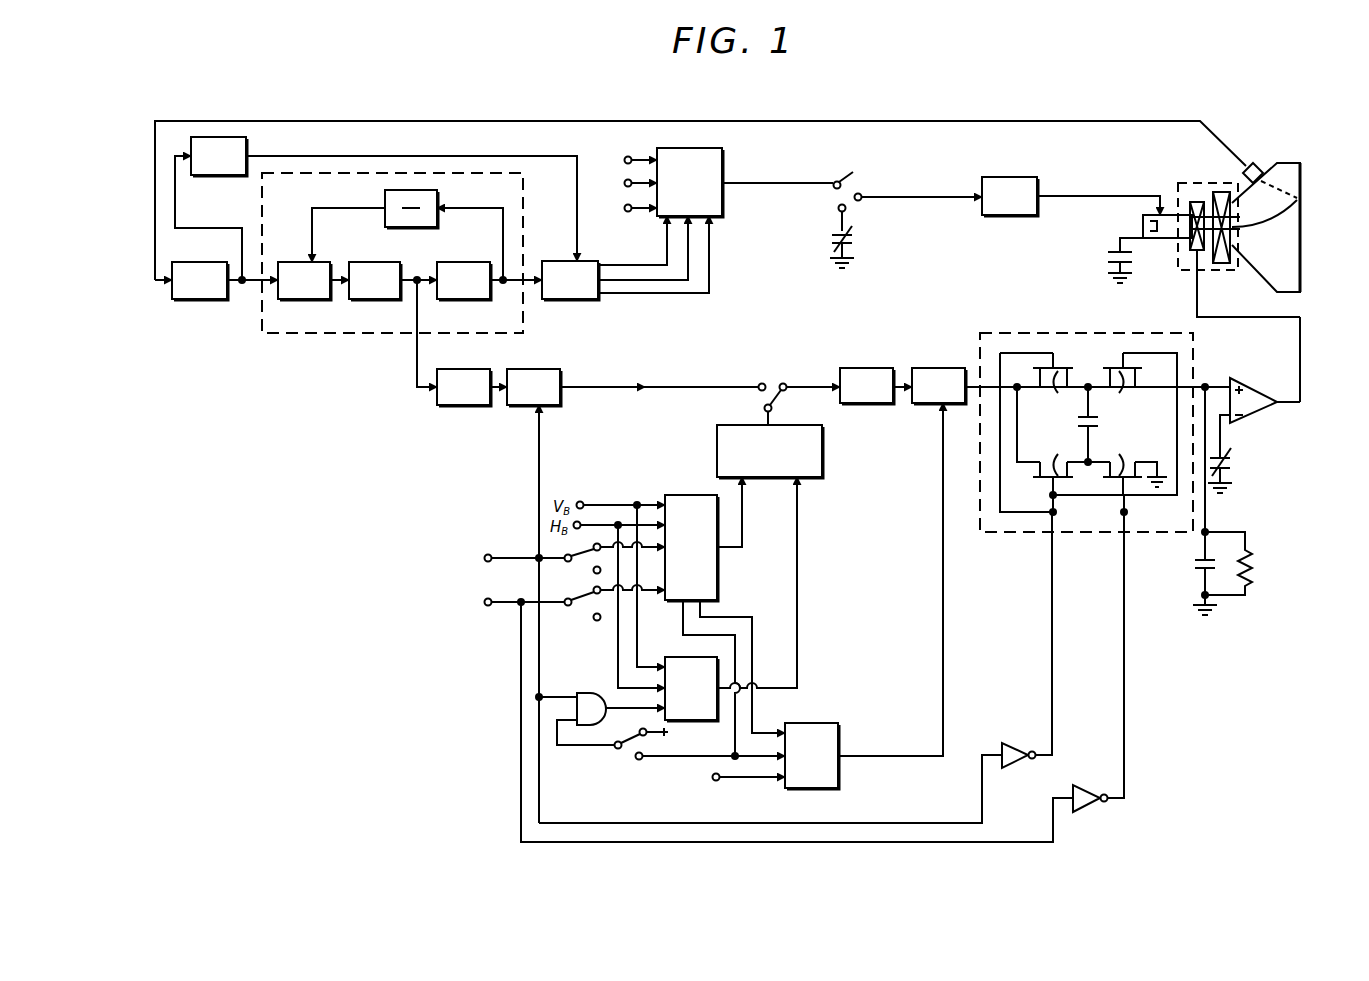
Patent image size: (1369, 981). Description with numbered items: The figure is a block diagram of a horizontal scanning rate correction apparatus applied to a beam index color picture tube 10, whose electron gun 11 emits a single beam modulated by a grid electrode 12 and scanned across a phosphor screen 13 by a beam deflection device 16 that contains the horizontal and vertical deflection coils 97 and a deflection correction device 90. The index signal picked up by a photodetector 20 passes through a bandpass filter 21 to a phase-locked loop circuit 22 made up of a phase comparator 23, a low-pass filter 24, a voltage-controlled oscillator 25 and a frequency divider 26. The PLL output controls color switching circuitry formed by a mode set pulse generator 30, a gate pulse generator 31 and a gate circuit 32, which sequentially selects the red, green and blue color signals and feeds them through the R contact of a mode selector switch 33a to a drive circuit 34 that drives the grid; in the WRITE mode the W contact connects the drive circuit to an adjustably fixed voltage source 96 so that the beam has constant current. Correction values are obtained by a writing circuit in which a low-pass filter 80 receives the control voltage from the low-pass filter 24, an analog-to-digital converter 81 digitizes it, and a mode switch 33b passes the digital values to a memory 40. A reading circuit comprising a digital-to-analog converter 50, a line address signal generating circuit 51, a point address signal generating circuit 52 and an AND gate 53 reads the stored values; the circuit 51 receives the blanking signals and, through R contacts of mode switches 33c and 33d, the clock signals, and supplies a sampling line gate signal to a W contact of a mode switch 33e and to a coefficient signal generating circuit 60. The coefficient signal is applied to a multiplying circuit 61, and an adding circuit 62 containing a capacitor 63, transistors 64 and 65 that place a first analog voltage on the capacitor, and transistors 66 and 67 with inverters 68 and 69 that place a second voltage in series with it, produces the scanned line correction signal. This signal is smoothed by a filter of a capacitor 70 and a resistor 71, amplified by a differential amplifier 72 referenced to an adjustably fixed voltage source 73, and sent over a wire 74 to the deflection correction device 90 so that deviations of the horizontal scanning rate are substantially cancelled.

The picture tube 10 is at (1254, 273).
The electron gun 11 is at (1143, 246).
The grid electrode 12 is at (1166, 240).
The phosphor screen 13 is at (1300, 232).
The beam deflection device 16 is at (1190, 183).
The photodetector 20 is at (1255, 163).
The bandpass filter 21 is at (192, 300).
The phase-locked loop circuit 22 is at (328, 335).
The phase comparator 23 is at (300, 300).
The low-pass filter 24 is at (366, 300).
The voltage-controlled oscillator 25 is at (455, 300).
The frequency divider 26 is at (425, 228).
The mode set pulse generator 30 is at (207, 176).
The gate pulse generator 31 is at (562, 300).
The gate circuit 32 is at (722, 216).
The mode selector switch 33a is at (867, 165).
The mode switch 33b is at (757, 400).
The mode switch 33c is at (582, 565).
The mode switch 33d is at (584, 610).
The mode switch 33e is at (622, 757).
The drive circuit 34 is at (1013, 216).
The memory 40 is at (822, 477).
The digital-to-analog converter 50 is at (876, 404).
The line address signal generating circuit 51 is at (672, 600).
The point address signal generating circuit 52 is at (693, 721).
The AND gate 53 is at (588, 692).
The coefficient signal generating circuit 60 is at (810, 789).
The multiplying circuit 61 is at (918, 404).
The adding circuit 62 is at (1094, 458).
The capacitor 63 is at (1098, 422).
The transistor 64 is at (1125, 440).
The transistor 65 is at (1055, 393).
The transistor 66 is at (1050, 440).
The transistor 67 is at (1121, 393).
The inverter 68 is at (1088, 803).
The inverter 69 is at (1018, 760).
The capacitor 70 is at (1194, 565).
The resistor 71 is at (1250, 572).
The differential amplifier 72 is at (1258, 412).
The adjustably fixed voltage source 73 is at (1232, 466).
The wire 74 is at (1300, 354).
The low-pass filter 80 is at (458, 406).
The analog-to-digital converter 81 is at (520, 406).
The deflection correction device 90 is at (1190, 258).
The adjustably fixed voltage source 96 is at (850, 240).
The horizontal and vertical deflection coils 97 is at (1221, 263).